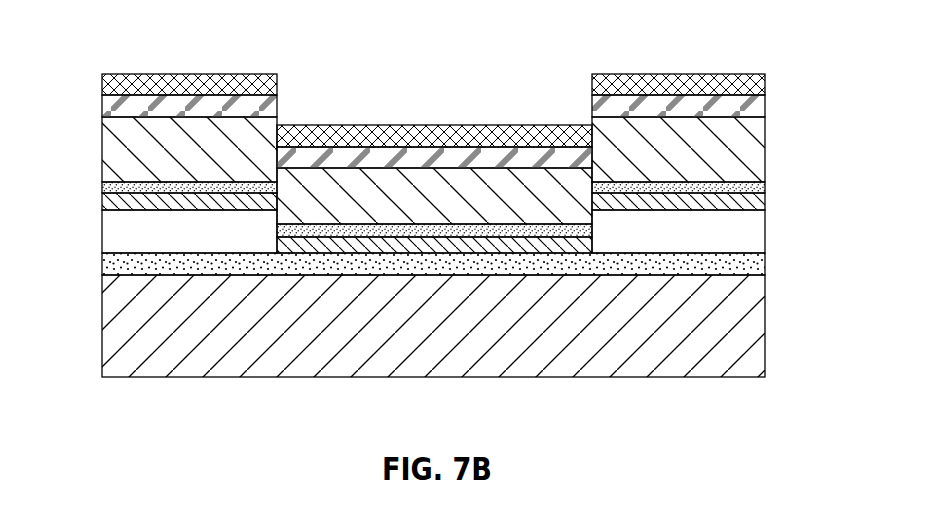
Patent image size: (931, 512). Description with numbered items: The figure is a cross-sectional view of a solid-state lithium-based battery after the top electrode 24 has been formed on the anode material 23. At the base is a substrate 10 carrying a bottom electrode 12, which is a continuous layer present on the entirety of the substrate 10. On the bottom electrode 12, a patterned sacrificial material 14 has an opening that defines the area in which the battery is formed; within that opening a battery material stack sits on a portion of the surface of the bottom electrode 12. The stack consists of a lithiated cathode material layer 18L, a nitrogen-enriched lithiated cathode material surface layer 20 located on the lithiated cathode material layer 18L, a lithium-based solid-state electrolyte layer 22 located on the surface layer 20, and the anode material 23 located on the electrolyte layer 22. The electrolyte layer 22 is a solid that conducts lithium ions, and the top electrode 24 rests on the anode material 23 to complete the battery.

The substrate 10 is at (447, 335).
The bottom electrode 12 is at (110, 263).
The patterned sacrificial material 14 is at (177, 243).
The lithiated cathode material layer 18L is at (112, 200).
The nitrogen-enriched lithiated cathode material surface layer 20 is at (112, 188).
The lithium-based solid-state electrolyte layer 22 is at (177, 160).
The anode material 23 is at (125, 105).
The top electrode 24 is at (142, 82).